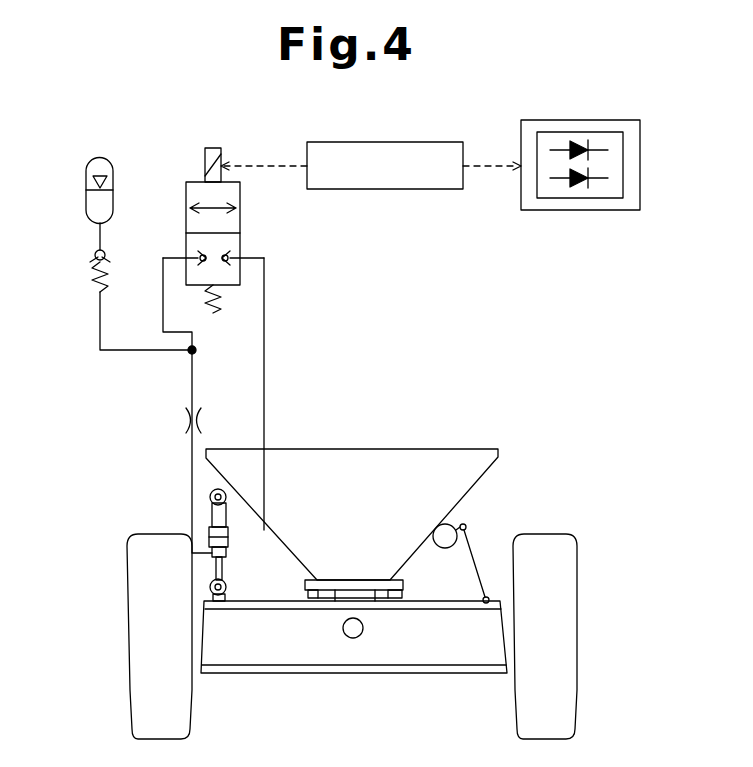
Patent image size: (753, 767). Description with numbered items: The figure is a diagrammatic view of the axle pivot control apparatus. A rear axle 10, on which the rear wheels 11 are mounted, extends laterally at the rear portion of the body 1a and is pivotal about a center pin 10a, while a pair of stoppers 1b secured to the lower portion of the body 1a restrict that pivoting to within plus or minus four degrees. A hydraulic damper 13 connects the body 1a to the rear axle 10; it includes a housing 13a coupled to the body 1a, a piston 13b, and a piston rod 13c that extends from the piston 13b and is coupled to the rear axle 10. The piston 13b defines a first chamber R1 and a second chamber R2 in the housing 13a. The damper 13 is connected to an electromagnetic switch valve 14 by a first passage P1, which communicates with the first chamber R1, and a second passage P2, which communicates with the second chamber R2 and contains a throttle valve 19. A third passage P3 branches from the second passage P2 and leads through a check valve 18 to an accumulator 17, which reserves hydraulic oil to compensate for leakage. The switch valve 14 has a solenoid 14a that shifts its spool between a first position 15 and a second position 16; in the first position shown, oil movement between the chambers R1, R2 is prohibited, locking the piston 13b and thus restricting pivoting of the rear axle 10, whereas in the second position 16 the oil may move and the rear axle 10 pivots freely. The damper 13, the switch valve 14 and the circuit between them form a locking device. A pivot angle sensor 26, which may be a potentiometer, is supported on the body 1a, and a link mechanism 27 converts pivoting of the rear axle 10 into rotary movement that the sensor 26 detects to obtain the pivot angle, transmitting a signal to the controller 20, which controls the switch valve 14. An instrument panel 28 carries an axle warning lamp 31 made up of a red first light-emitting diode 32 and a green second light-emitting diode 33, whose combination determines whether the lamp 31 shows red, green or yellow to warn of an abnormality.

The body 1a is at (475, 483).
The stoppers 1b is at (311, 598).
The rear axle 10 is at (354, 657).
The center pin 10a is at (353, 639).
The rear wheels 11 is at (132, 718).
The hydraulic damper 13 is at (236, 552).
The housing 13a is at (227, 556).
The piston 13b is at (228, 542).
The piston rod 13c is at (227, 583).
The electromagnetic switch valve 14 is at (209, 214).
The solenoid 14a is at (213, 148).
The first position 15 is at (186, 248).
The second position 16 is at (240, 217).
The accumulator 17 is at (86, 175).
The check valve 18 is at (92, 256).
The throttle valve 19 is at (185, 420).
The controller 20 is at (428, 142).
The pivot angle sensor 26 is at (438, 531).
The link mechanism 27 is at (472, 560).
The instrument panel 28 is at (619, 168).
The axle warning lamp 31 is at (623, 178).
The first light-emitting diode 32 is at (582, 141).
The second light-emitting diode 33 is at (578, 188).
The first passage P1 is at (265, 403).
The second passage P2 is at (193, 465).
The third passage P3 is at (115, 353).
The first chamber R1 is at (209, 537).
The second chamber R2 is at (213, 561).